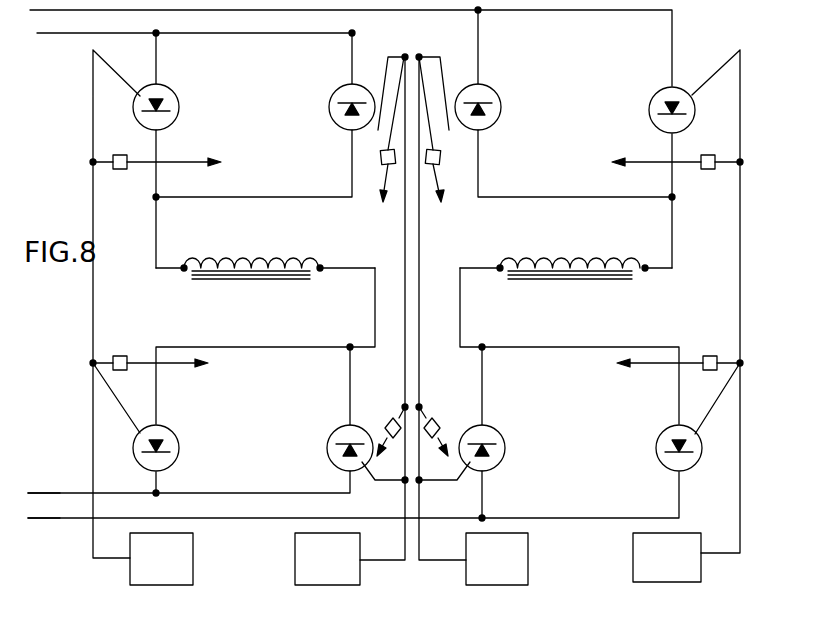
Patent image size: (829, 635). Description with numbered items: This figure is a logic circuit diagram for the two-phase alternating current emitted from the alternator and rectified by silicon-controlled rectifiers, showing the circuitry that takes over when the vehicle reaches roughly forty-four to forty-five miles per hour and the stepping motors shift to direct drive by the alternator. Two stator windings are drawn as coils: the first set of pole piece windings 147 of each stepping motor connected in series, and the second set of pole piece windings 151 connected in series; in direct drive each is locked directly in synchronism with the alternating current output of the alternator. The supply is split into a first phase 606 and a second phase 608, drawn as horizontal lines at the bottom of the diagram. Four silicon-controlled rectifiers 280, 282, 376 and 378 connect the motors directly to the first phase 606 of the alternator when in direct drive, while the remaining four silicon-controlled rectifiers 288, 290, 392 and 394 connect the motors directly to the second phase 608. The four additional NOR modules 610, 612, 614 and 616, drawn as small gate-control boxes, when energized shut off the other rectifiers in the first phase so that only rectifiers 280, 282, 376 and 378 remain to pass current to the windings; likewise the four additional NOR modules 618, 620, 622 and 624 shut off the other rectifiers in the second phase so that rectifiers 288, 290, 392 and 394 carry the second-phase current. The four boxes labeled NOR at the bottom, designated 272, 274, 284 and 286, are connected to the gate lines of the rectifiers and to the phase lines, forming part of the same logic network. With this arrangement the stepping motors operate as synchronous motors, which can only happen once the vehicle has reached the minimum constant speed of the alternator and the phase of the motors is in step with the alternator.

The silicon-controlled rectifier 376 is at (180, 100).
The silicon-controlled rectifier 282 is at (329, 100).
The silicon-controlled rectifier 290 is at (497, 94).
The silicon-controlled rectifier 392 is at (650, 100).
The silicon-controlled rectifier 378 is at (178, 440).
The silicon-controlled rectifier 280 is at (335, 415).
The silicon-controlled rectifier 288 is at (503, 435).
The silicon-controlled rectifier 394 is at (657, 438).
The NOR module 610 is at (121, 170).
The NOR module 612 is at (122, 356).
The NOR module 614 is at (382, 426).
The NOR module 616 is at (380, 157).
The NOR module 618 is at (440, 426).
The NOR module 620 is at (441, 157).
The NOR module 622 is at (709, 155).
The NOR module 624 is at (711, 356).
The first set of pole piece windings 147 is at (262, 280).
The second set of pole piece windings 151 is at (525, 280).
The first phase 606 is at (88, 493).
The second phase 608 is at (84, 566).
The NOR gate 272 is at (190, 565).
The NOR gate 274 is at (342, 587).
The NOR gate 284 is at (497, 587).
The NOR gate 286 is at (686, 575).